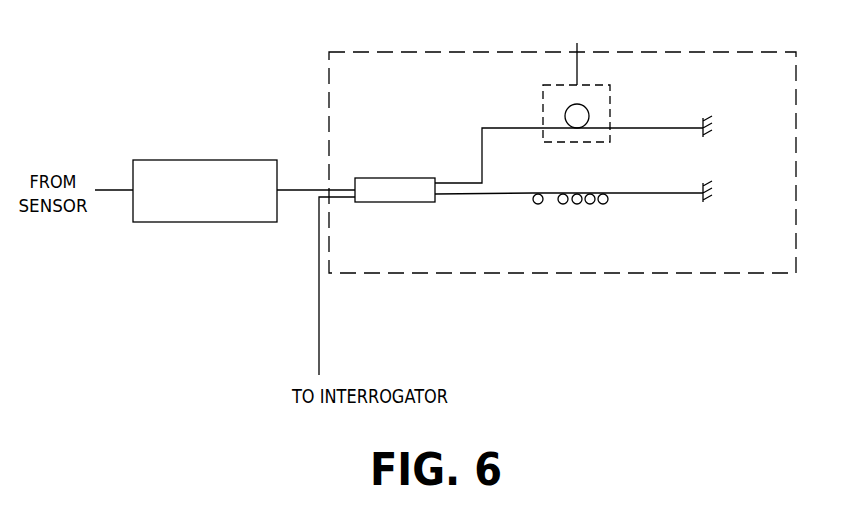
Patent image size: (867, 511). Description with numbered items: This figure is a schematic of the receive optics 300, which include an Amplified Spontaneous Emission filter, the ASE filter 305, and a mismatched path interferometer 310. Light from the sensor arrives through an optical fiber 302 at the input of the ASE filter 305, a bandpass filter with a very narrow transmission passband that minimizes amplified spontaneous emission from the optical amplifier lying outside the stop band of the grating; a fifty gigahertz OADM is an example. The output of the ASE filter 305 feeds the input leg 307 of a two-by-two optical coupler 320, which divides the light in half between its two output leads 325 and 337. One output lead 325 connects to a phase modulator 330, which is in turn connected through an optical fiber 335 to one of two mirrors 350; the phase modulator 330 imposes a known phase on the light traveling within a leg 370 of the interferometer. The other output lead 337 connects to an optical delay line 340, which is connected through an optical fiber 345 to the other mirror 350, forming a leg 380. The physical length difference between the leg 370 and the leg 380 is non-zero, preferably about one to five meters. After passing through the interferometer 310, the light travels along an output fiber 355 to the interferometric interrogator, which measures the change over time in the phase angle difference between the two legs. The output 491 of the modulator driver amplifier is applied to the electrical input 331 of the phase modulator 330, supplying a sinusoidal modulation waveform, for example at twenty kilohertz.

The receive optics 300 is at (156, 257).
The optical fiber 302 is at (115, 190).
The ASE filter 305 is at (207, 222).
The input leg 307 is at (303, 190).
The mismatched path interferometer 310 is at (387, 273).
The 2×2 optical coupler 320 is at (395, 202).
The output lead 325 is at (482, 143).
The phase modulator 330 is at (543, 110).
The electrical input 331 is at (577, 68).
The optical fiber 335 is at (652, 128).
The output lead 337 is at (488, 194).
The optical delay line 340 is at (578, 205).
The optical fiber 345 is at (655, 195).
The mirrors 350 is at (728, 158).
The output fiber 355 is at (319, 282).
The leg 370 is at (497, 140).
The leg 380 is at (573, 257).
The output 491 is at (578, 50).